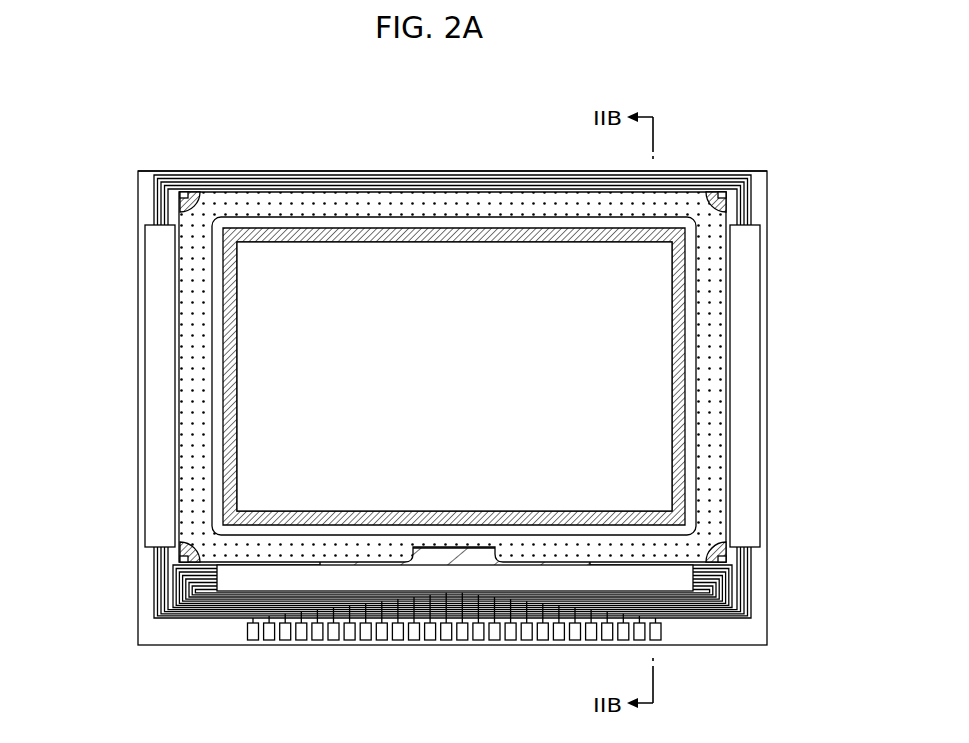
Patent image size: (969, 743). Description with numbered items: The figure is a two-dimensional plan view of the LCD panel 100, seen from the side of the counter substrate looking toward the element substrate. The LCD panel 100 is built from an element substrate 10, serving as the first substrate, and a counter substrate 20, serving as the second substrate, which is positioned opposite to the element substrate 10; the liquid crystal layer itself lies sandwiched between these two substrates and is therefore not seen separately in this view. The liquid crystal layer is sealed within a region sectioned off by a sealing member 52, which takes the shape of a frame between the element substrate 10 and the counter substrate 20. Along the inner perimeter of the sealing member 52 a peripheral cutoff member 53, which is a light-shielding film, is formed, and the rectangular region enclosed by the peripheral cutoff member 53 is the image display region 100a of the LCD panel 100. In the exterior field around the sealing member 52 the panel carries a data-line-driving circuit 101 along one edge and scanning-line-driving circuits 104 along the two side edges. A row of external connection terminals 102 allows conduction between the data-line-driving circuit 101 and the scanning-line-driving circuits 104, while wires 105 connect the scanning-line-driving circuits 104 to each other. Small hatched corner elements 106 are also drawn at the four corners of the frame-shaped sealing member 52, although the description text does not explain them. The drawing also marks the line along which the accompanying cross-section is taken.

The LCD panel 100 is at (752, 138).
The image display region 100a is at (278, 312).
The element substrate 10 is at (457, 171).
The counter substrate 20 is at (548, 217).
The sealing member 52 is at (710, 358).
The peripheral cutoff member 53 is at (696, 288).
The data-line-driving circuit 101 is at (257, 581).
The external connection terminals 102 is at (378, 633).
The scanning-line-driving circuits 104 is at (157, 378).
The wires 105 is at (343, 178).
The corner spacers 106 is at (188, 194).